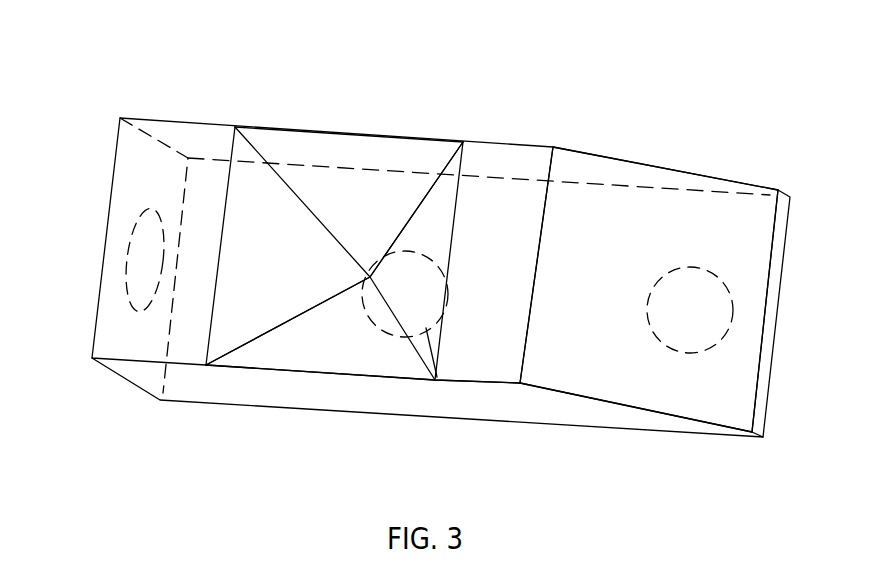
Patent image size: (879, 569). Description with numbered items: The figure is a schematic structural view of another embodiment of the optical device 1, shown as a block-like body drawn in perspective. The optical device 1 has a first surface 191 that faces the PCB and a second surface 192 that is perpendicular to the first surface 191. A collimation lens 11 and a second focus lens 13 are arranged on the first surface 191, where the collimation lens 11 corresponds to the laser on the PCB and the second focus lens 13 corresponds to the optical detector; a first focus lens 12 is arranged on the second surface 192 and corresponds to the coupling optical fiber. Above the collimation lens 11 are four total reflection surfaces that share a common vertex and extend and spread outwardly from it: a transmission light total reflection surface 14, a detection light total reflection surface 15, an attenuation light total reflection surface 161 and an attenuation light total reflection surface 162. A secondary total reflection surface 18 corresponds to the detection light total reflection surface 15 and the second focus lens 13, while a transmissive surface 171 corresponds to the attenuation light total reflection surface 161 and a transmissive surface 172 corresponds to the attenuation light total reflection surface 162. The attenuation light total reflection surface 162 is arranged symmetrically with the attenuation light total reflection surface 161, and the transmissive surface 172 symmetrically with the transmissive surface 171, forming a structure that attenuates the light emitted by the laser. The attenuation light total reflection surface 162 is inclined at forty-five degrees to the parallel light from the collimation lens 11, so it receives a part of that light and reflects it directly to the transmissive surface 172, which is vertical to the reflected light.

The optical device 1 is at (95, 68).
The collimation lens 11 is at (435, 380).
The first focus lens 12 is at (127, 270).
The second focus lens 13 is at (723, 340).
The transmission light total reflection surface 14 is at (245, 178).
The detection light total reflection surface 15 is at (442, 198).
The attenuation light total reflection surface 161 is at (356, 197).
The attenuation light total reflection surface 162 is at (303, 355).
The transmissive surface 171 is at (308, 153).
The transmissive surface 172 is at (395, 388).
The secondary total reflection surface 18 is at (682, 225).
The first surface 191 is at (612, 187).
The second surface 192 is at (138, 195).